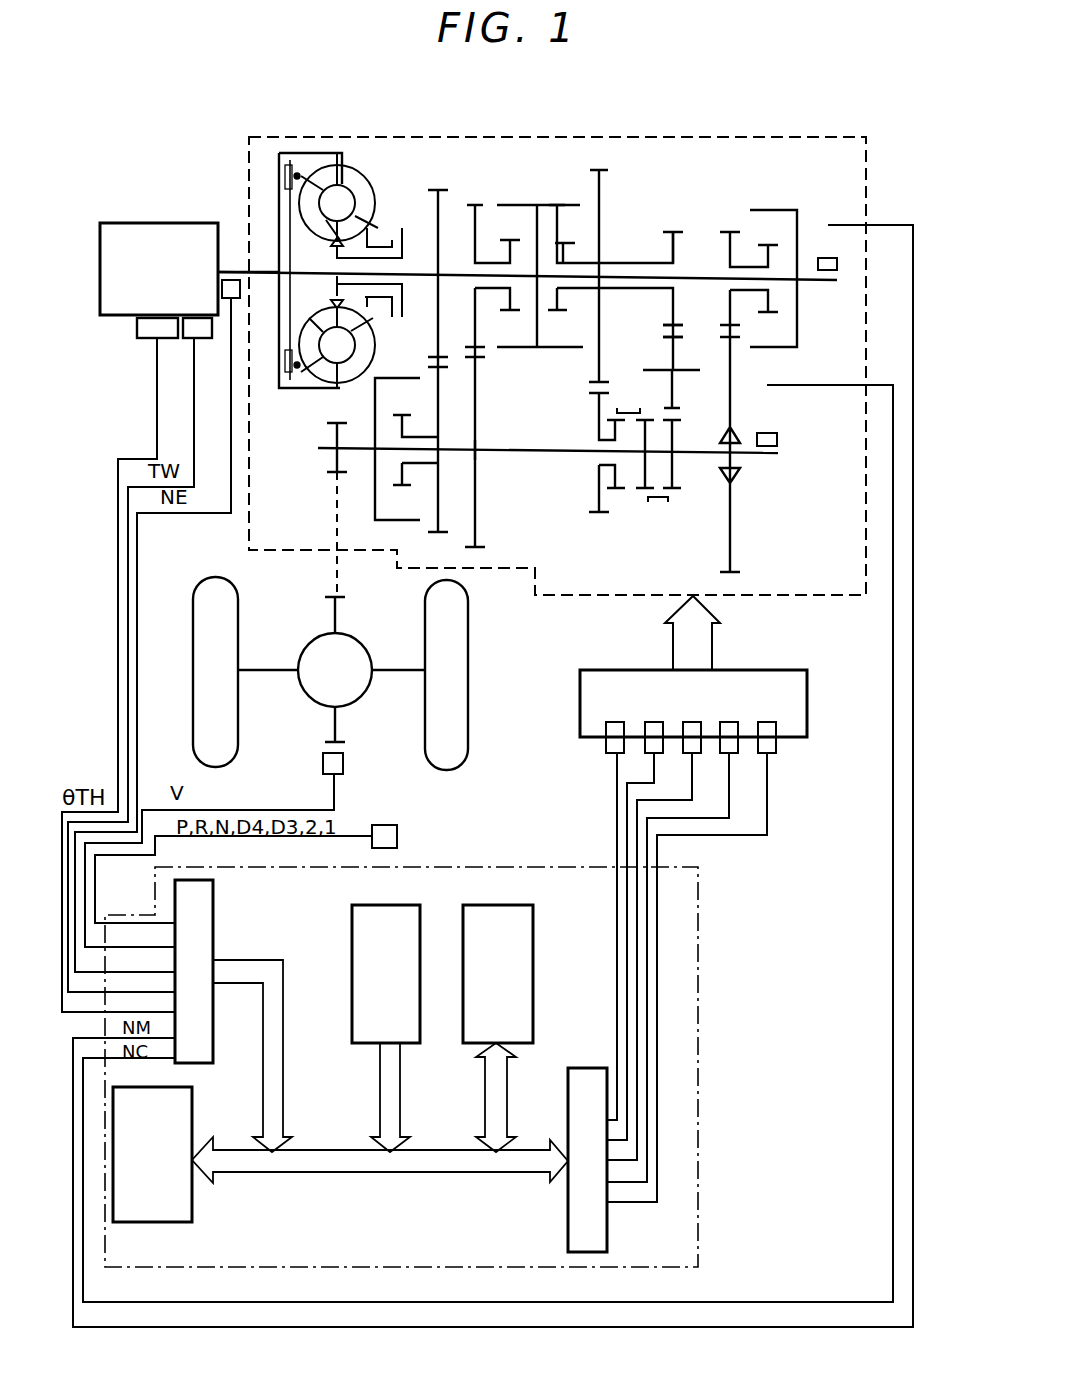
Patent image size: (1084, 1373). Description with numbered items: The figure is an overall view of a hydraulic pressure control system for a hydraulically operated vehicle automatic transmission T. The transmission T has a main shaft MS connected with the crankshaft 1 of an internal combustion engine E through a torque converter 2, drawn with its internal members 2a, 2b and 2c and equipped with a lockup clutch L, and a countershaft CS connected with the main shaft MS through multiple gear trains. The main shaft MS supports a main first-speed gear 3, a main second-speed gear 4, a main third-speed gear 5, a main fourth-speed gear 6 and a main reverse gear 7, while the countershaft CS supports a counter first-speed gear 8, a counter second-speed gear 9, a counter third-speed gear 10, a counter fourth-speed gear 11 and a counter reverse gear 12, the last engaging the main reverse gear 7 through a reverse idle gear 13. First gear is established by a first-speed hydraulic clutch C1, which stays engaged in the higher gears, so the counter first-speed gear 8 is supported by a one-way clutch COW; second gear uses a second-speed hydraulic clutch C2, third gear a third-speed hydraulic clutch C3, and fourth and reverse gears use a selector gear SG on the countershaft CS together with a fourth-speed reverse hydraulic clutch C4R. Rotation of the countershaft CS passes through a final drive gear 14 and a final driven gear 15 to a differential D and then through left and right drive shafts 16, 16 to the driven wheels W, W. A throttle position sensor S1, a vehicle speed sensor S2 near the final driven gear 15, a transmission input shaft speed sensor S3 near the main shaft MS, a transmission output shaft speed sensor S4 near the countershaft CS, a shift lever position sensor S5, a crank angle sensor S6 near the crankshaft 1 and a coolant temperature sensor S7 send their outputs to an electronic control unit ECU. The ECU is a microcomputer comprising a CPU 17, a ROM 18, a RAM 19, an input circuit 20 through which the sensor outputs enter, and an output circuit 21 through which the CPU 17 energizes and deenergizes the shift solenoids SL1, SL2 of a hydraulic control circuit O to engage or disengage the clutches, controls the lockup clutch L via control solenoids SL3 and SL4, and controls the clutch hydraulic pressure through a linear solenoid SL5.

The crankshaft 1 is at (232, 268).
The torque converter 2 is at (324, 239).
The turbine 2a is at (356, 212).
The pump 2b is at (330, 186).
The stator 2c is at (338, 240).
The main first-speed gear 3 is at (731, 232).
The main second-speed gear 4 is at (475, 205).
The main third-speed gear 5 is at (438, 190).
The main fourth-speed gear 6 is at (605, 170).
The main reverse gear 7 is at (675, 232).
The counter first-speed gear 8 is at (742, 578).
The counter second-speed gear 9 is at (480, 548).
The counter third-speed gear 10 is at (445, 535).
The counter fourth-speed gear 11 is at (592, 515).
The counter reverse gear 12 is at (676, 490).
The reverse idle gear 13 is at (680, 330).
The final drive gear 14 is at (330, 423).
The final driven gear 15 is at (326, 602).
The drive shafts 16 is at (262, 670).
The CPU 17 is at (192, 1118).
The ROM 18 is at (352, 942).
The RAM 19 is at (534, 948).
The input circuit 20 is at (214, 915).
The output circuit 21 is at (568, 1208).
The internal combustion engine E is at (128, 223).
The lockup clutch L is at (279, 160).
The vehicle automatic transmission T is at (816, 137).
The first-speed hydraulic clutch C1 is at (777, 212).
The second-speed hydraulic clutch C2 is at (520, 200).
The third-speed hydraulic clutch C3 is at (385, 508).
The fourth-speed reverse hydraulic clutch C4R is at (555, 210).
The one-way clutch COW is at (735, 478).
The selector gear SG is at (648, 508).
The main shaft MS is at (812, 282).
The countershaft CS is at (780, 455).
The differential D is at (352, 648).
The driven wheels W is at (204, 642).
The hydraulic control circuit O is at (580, 693).
The throttle position sensor S1 is at (148, 338).
The vehicle speed sensor S2 is at (345, 764).
The transmission input shaft speed sensor S3 is at (828, 258).
The transmission output shaft speed sensor S4 is at (777, 439).
The shift lever position sensor S5 is at (398, 836).
The crank angle sensor S6 is at (240, 280).
The coolant temperature sensor S7 is at (192, 338).
The shift solenoid SL1 is at (610, 742).
The shift solenoid SL2 is at (648, 742).
The control solenoid SL3 is at (695, 742).
The control solenoid SL4 is at (732, 742).
The linear solenoid SL5 is at (770, 742).
The electronic control unit ECU is at (702, 1036).